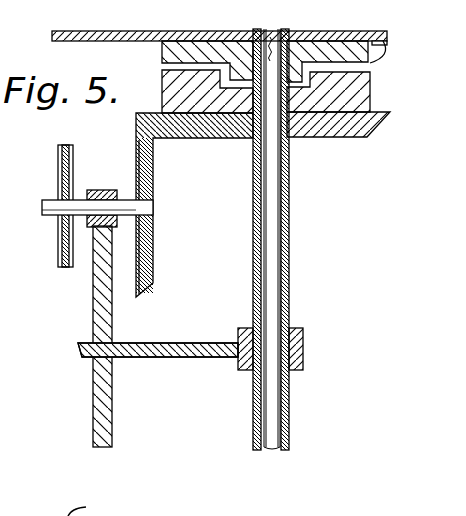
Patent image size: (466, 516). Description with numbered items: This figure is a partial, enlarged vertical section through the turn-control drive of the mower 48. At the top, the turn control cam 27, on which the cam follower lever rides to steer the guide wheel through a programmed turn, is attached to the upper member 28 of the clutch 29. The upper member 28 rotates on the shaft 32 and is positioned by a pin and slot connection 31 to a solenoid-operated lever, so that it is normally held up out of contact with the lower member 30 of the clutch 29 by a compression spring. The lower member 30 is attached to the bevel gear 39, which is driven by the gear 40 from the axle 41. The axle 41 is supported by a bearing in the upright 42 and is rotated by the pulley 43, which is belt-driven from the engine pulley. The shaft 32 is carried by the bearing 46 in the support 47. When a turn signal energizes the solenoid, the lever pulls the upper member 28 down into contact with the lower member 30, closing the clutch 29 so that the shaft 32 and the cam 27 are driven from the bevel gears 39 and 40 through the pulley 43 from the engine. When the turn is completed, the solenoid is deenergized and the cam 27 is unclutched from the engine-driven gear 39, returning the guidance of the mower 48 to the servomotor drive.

The turn control cam 27 is at (124, 41).
The upper member of clutch 28 is at (162, 57).
The clutch 29 is at (384, 31).
The lower member of clutch 30 is at (162, 97).
The pin and slot connection 31 is at (277, 27).
The shaft 32 is at (290, 268).
The bevel gear 39 is at (305, 141).
The gear 40 is at (155, 240).
The axle 41 is at (130, 200).
The upright 42 is at (93, 300).
The pulley 43 is at (73, 162).
The bearing 46 is at (303, 329).
The support 47 is at (208, 320).
The mower 48 is at (8, 374).